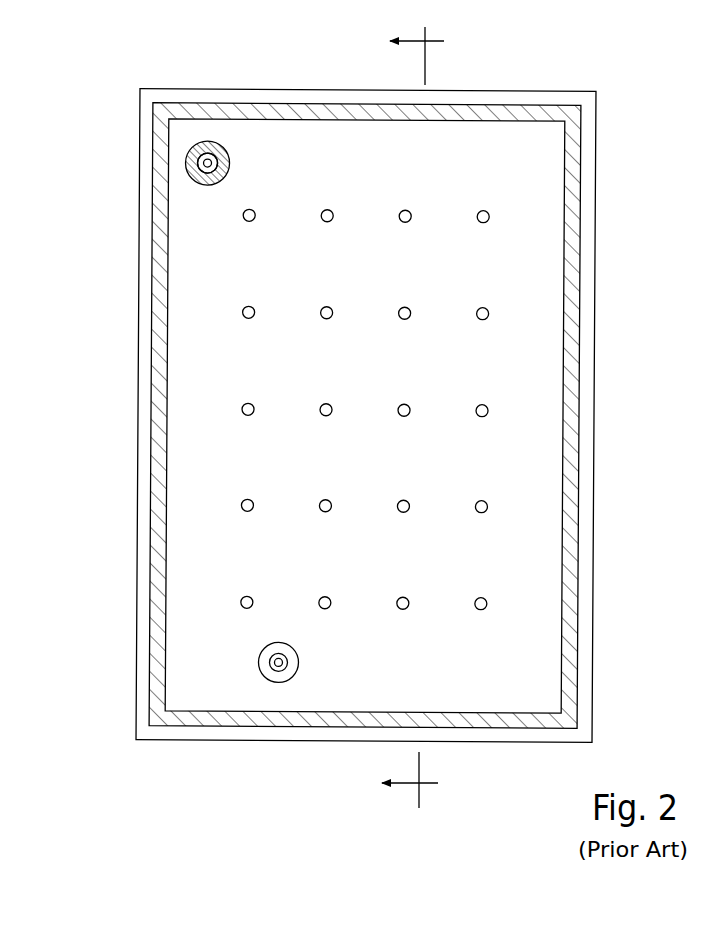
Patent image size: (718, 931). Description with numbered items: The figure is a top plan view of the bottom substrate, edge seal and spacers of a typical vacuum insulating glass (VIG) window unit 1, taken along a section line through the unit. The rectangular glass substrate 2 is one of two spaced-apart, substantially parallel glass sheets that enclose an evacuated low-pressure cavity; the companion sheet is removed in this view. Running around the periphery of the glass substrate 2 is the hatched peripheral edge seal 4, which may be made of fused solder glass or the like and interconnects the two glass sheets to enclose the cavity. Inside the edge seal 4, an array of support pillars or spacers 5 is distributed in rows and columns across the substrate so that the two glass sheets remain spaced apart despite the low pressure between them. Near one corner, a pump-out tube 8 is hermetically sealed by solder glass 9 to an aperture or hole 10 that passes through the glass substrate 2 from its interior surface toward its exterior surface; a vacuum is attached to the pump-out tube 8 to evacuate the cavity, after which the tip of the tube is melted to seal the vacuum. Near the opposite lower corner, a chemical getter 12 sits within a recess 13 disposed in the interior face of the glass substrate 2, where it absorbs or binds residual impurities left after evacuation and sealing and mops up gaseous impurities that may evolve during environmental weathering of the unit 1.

The VIG window unit 1 is at (119, 611).
The glass substrate 2 is at (335, 100).
The peripheral edge seal 4 is at (235, 108).
The support pillars/spacers 5 is at (489, 312).
The pump-out tube 8 is at (202, 164).
The solder glass 9 is at (206, 186).
The aperture/hole 10 is at (197, 168).
The chemical getter 12 is at (279, 667).
The recess 13 is at (300, 660).